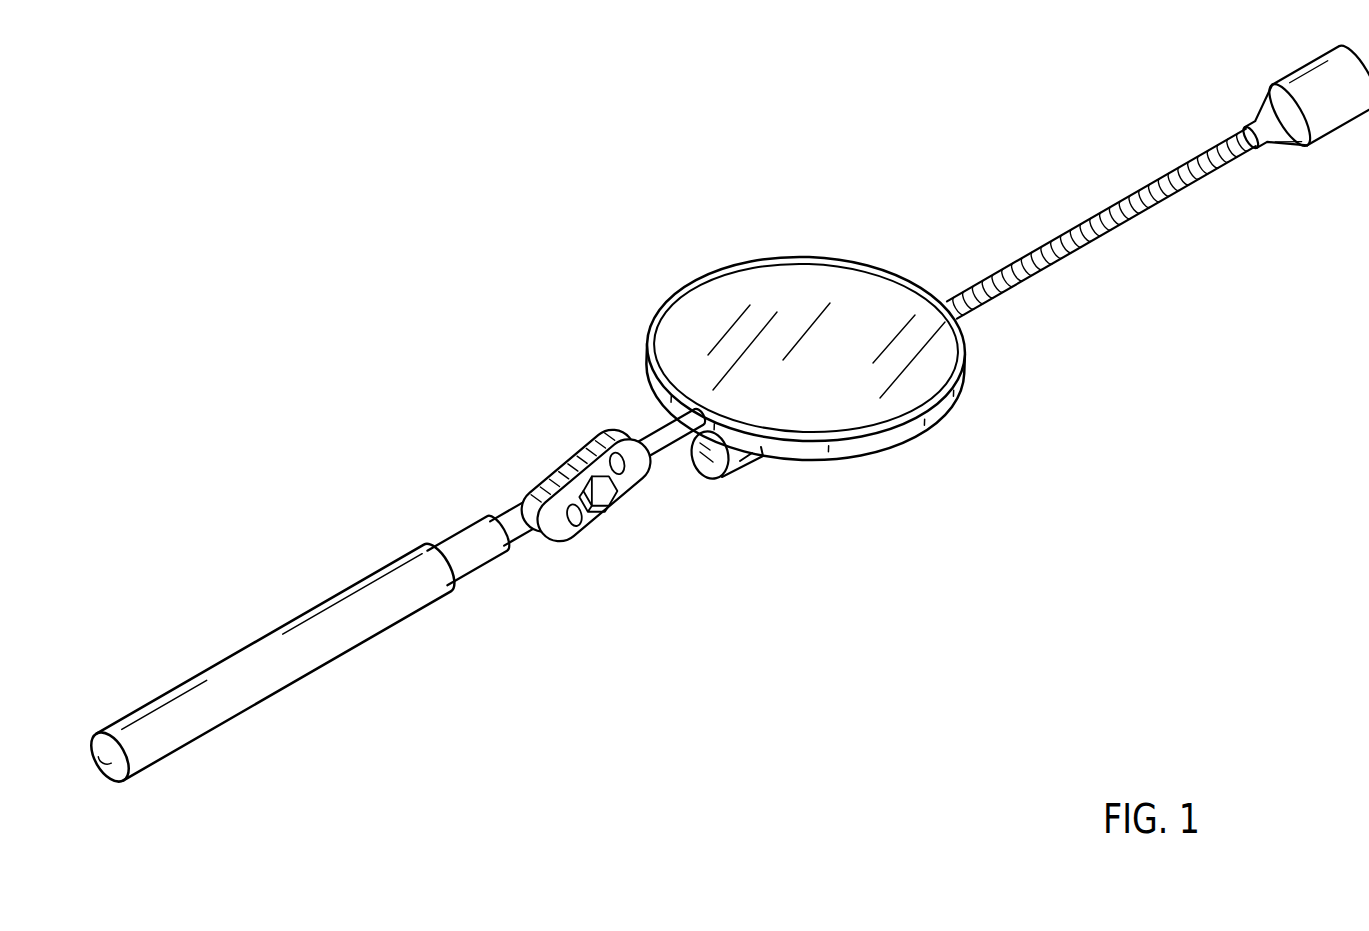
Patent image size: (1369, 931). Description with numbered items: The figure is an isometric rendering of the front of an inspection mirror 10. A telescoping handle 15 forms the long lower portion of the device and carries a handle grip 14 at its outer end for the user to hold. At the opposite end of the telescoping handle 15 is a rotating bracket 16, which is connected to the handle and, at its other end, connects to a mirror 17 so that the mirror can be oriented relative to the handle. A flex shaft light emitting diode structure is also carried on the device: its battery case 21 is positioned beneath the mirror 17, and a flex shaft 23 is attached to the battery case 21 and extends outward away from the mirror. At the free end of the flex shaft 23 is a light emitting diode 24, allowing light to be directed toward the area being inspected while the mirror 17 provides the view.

The inspection mirror 10 is at (415, 283).
The handle grip 14 is at (260, 673).
The telescoping handle 15 is at (492, 553).
The rotating bracket 16 is at (573, 443).
The mirror 17 is at (777, 300).
The battery case 21 is at (708, 460).
The flex shaft 23 is at (1093, 227).
The light emitting diode (LED) 24 is at (1323, 97).